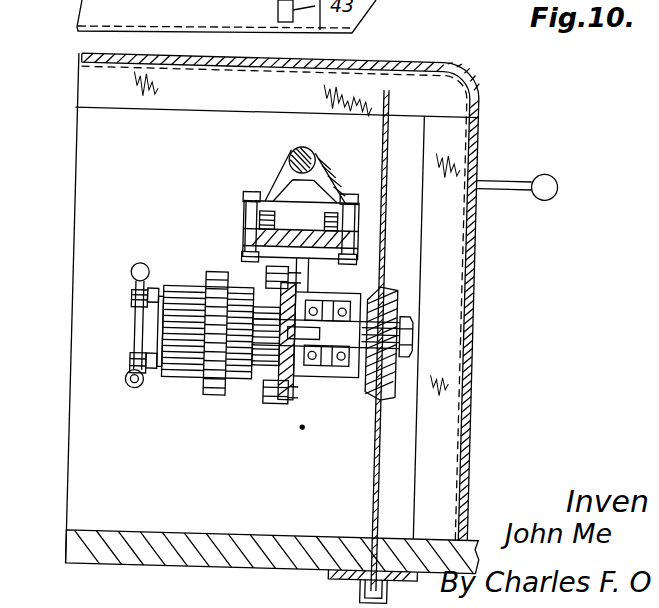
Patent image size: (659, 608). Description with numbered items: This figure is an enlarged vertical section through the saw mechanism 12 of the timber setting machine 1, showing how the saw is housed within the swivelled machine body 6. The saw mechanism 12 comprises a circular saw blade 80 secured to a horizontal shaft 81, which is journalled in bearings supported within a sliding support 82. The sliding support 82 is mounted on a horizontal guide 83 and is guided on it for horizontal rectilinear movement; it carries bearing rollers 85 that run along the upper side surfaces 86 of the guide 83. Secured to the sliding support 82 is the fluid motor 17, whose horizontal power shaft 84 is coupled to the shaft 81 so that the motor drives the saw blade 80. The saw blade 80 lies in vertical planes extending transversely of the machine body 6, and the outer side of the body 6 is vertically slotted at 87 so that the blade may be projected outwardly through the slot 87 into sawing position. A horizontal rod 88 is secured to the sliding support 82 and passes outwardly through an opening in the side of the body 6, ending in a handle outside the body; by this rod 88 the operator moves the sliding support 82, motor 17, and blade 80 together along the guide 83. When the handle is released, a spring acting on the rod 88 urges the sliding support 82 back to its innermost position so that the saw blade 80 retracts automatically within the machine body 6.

The machine 1 is at (64, 73).
The machine body 6 is at (373, 63).
The saw mechanism 12 is at (404, 317).
The fluid motor 17 is at (190, 371).
The circular saw blade 80 is at (378, 131).
The horizontal shaft 81 is at (380, 330).
The sliding support 82 is at (311, 261).
The horizontal guide 83 is at (277, 238).
The power shaft 84 is at (275, 364).
The bearing rollers 85 is at (258, 220).
The upper side surfaces 86 is at (242, 222).
The vertical slot 87 is at (370, 575).
The horizontal rod 88 is at (286, 162).